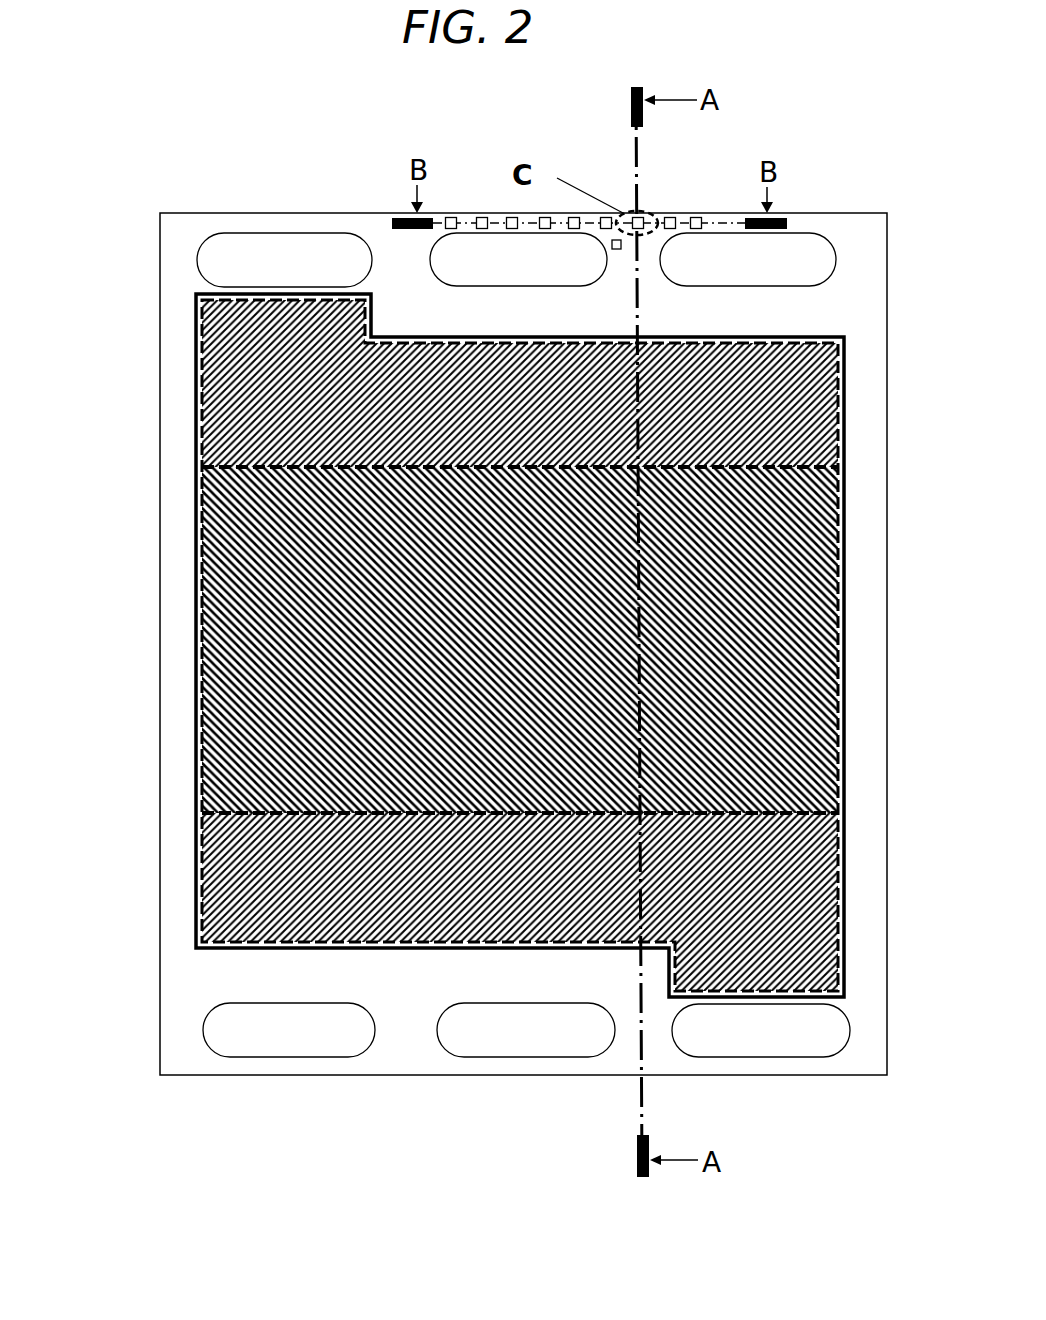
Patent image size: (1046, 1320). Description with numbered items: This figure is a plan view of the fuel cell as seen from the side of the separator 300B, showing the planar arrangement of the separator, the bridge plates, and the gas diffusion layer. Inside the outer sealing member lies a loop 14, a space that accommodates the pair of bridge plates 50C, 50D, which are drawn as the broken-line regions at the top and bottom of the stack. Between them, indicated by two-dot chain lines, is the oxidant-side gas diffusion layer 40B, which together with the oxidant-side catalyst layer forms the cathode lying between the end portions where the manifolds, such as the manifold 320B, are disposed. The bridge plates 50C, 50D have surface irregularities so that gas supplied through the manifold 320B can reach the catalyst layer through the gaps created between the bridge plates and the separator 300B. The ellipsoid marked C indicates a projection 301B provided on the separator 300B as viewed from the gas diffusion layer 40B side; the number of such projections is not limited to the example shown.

The separator 300B is at (172, 310).
The projection 301B is at (643, 217).
The manifold 320B is at (275, 255).
The bridge plate 50C is at (278, 425).
The oxidant-side gas diffusion layer 40B is at (278, 590).
The bridge plate 50D is at (230, 875).
The loop 14 is at (192, 510).